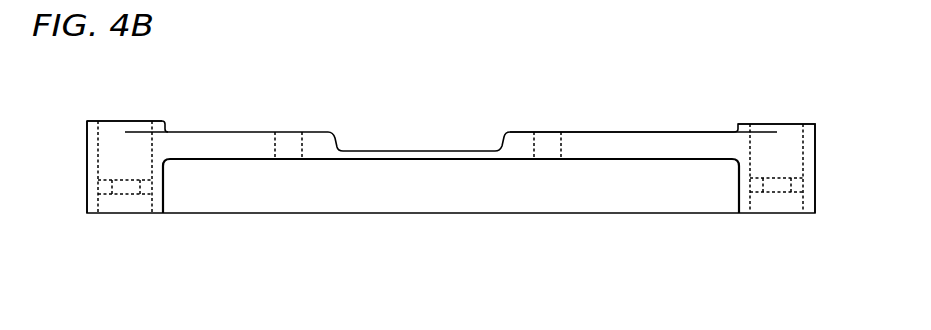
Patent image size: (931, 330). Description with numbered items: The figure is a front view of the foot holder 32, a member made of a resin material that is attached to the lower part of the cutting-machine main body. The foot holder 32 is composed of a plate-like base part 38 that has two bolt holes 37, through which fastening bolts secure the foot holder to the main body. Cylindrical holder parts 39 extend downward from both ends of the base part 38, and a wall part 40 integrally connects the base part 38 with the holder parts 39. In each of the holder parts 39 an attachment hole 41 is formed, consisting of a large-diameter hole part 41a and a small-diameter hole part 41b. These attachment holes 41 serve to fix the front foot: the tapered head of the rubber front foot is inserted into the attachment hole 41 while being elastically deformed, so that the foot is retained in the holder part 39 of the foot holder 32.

The foot holder 32 is at (614, 94).
The bolt holes 37 is at (287, 140).
The base part 38 is at (387, 150).
The holder parts 39 is at (87, 148).
The wall part 40 is at (482, 197).
The attachment hole 41 is at (257, 236).
The large-diameter hole part 41a is at (137, 163).
The small-diameter hole part 41b is at (133, 191).